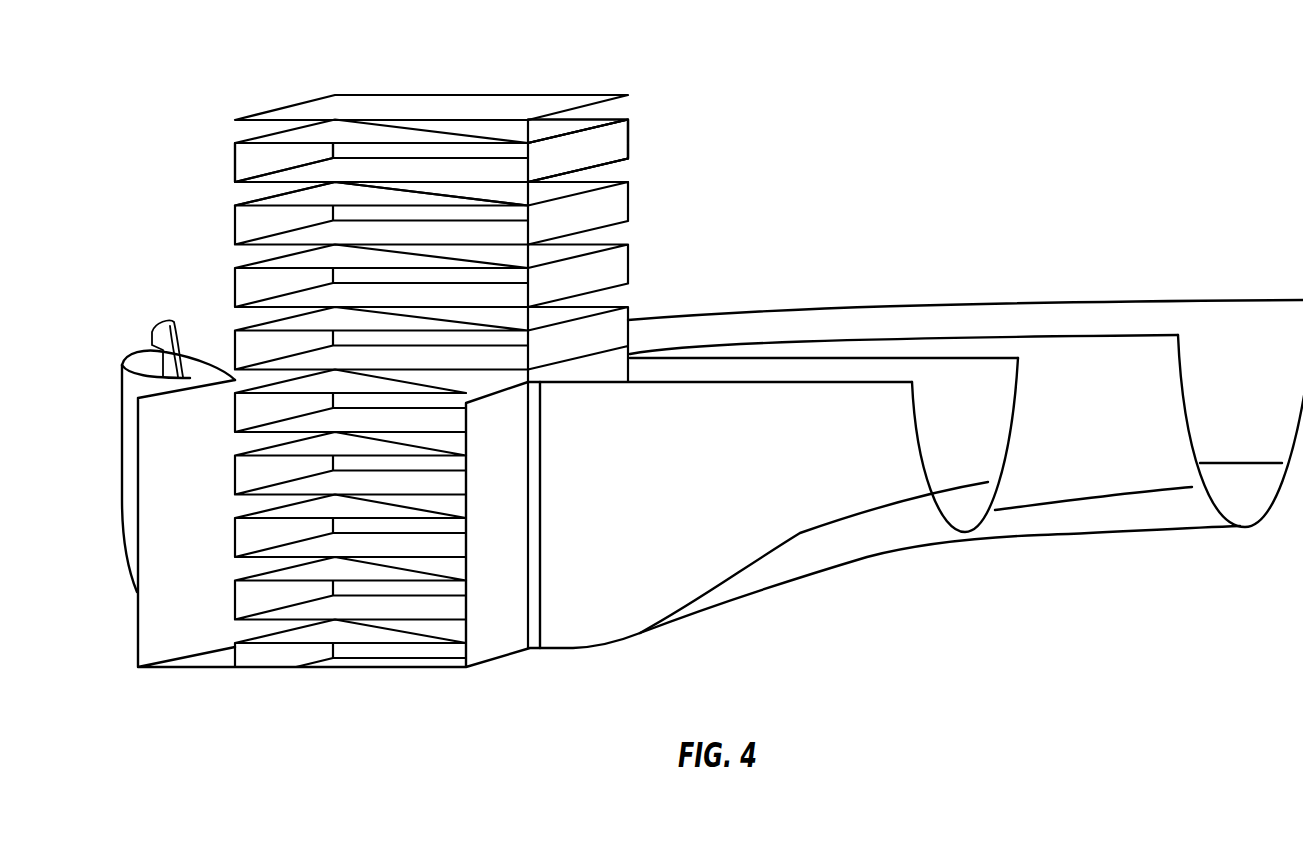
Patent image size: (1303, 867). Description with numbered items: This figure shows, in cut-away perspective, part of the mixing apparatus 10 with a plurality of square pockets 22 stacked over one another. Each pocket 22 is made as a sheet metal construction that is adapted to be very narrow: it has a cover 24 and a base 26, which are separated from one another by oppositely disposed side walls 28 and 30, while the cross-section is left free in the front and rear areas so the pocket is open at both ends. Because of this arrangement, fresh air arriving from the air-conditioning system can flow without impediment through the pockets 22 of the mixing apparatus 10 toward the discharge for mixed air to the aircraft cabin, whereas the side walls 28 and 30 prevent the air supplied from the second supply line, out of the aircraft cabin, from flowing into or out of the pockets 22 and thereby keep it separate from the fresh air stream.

The mixing apparatus 10 is at (502, 93).
The pocket 22 is at (632, 143).
The cover 24 is at (618, 120).
The base 26 is at (252, 183).
The side wall 28 is at (618, 163).
The side wall 30 is at (233, 163).